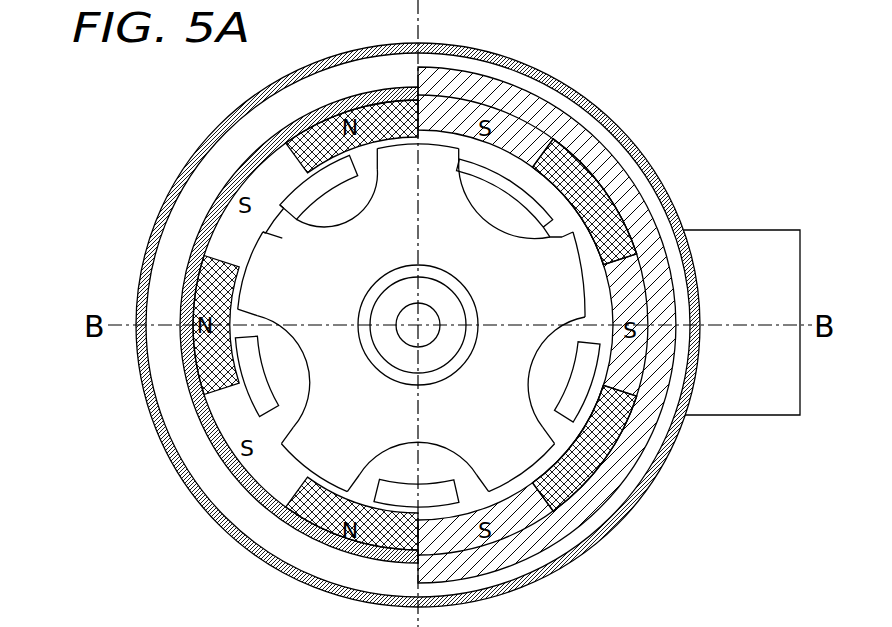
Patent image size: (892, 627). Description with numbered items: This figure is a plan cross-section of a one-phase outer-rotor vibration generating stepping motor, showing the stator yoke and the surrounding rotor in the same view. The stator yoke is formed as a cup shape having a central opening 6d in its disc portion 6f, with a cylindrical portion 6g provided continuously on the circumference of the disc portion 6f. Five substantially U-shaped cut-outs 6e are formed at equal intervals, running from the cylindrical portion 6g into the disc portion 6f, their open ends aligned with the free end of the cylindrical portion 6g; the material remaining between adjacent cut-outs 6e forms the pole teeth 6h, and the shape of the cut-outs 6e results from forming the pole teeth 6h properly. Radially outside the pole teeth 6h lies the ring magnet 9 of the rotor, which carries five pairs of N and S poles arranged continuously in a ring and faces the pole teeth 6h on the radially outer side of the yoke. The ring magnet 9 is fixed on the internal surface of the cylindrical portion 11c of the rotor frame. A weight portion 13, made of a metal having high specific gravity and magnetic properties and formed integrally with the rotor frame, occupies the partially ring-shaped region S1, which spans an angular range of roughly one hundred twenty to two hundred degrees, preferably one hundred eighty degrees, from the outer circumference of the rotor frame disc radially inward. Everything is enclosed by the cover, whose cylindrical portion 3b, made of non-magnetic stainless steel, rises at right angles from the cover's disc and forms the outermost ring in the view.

The partially ring-shaped region S1 is at (626, 183).
The cylindrical portion 3b is at (605, 552).
The ring magnet 9 is at (262, 519).
The cylindrical portion 11c is at (266, 468).
The weight portion 13 is at (620, 500).
The disc portion 6f is at (370, 265).
The pole teeth 6h is at (250, 263).
The cut-outs 6e is at (306, 390).
The cylindrical portion 6g is at (262, 468).
The opening 6d is at (453, 372).